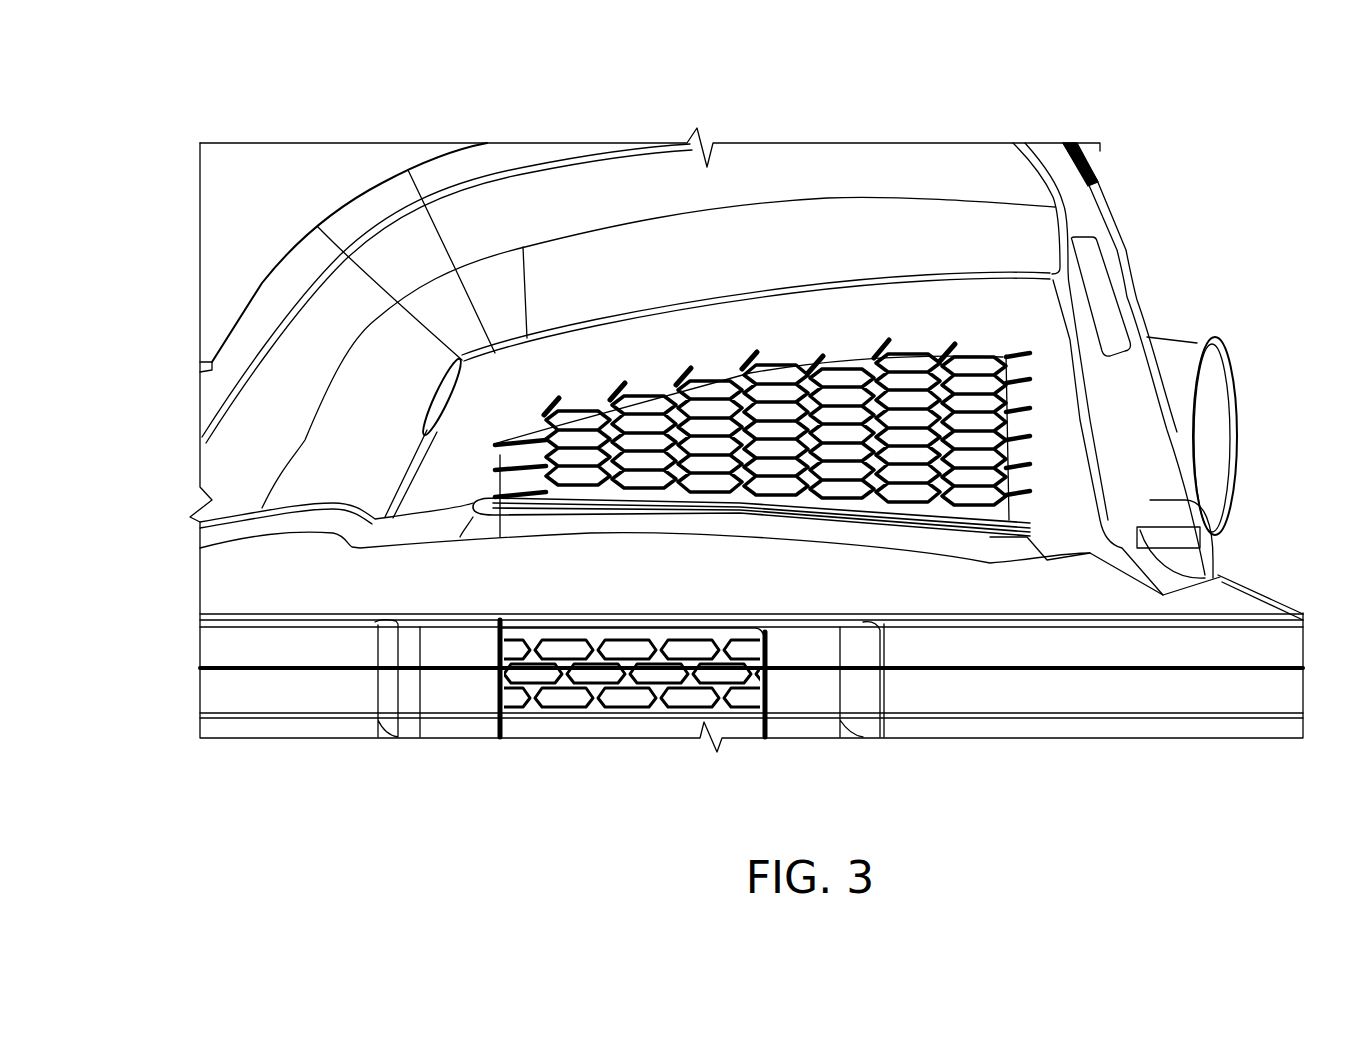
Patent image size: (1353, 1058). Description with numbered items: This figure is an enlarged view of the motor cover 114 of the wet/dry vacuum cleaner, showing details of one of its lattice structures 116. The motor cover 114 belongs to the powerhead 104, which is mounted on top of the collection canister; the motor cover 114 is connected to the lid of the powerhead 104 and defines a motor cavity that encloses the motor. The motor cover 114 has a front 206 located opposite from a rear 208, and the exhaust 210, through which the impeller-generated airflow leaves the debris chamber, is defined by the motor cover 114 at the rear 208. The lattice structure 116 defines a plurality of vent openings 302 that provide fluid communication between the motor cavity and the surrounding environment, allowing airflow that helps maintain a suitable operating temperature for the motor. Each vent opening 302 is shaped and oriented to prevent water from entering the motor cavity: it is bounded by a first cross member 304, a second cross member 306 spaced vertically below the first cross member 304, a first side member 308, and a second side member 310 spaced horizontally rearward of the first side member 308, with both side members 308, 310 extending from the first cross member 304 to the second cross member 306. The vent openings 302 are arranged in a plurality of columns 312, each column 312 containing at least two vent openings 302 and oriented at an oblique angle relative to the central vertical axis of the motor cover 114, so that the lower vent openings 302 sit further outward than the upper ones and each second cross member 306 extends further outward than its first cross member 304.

The powerhead 104 is at (352, 587).
The motor cover 114 is at (393, 250).
The lattice structure 116 is at (903, 485).
The front 206 is at (258, 275).
The rear 208 is at (1115, 197).
The exhaust 210 is at (1190, 345).
The vent opening 302 is at (852, 437).
The first cross member 304 is at (703, 424).
The second cross member 306 is at (710, 425).
The first side member 308 is at (675, 403).
The second side member 310 is at (760, 385).
The column 312 is at (823, 503).